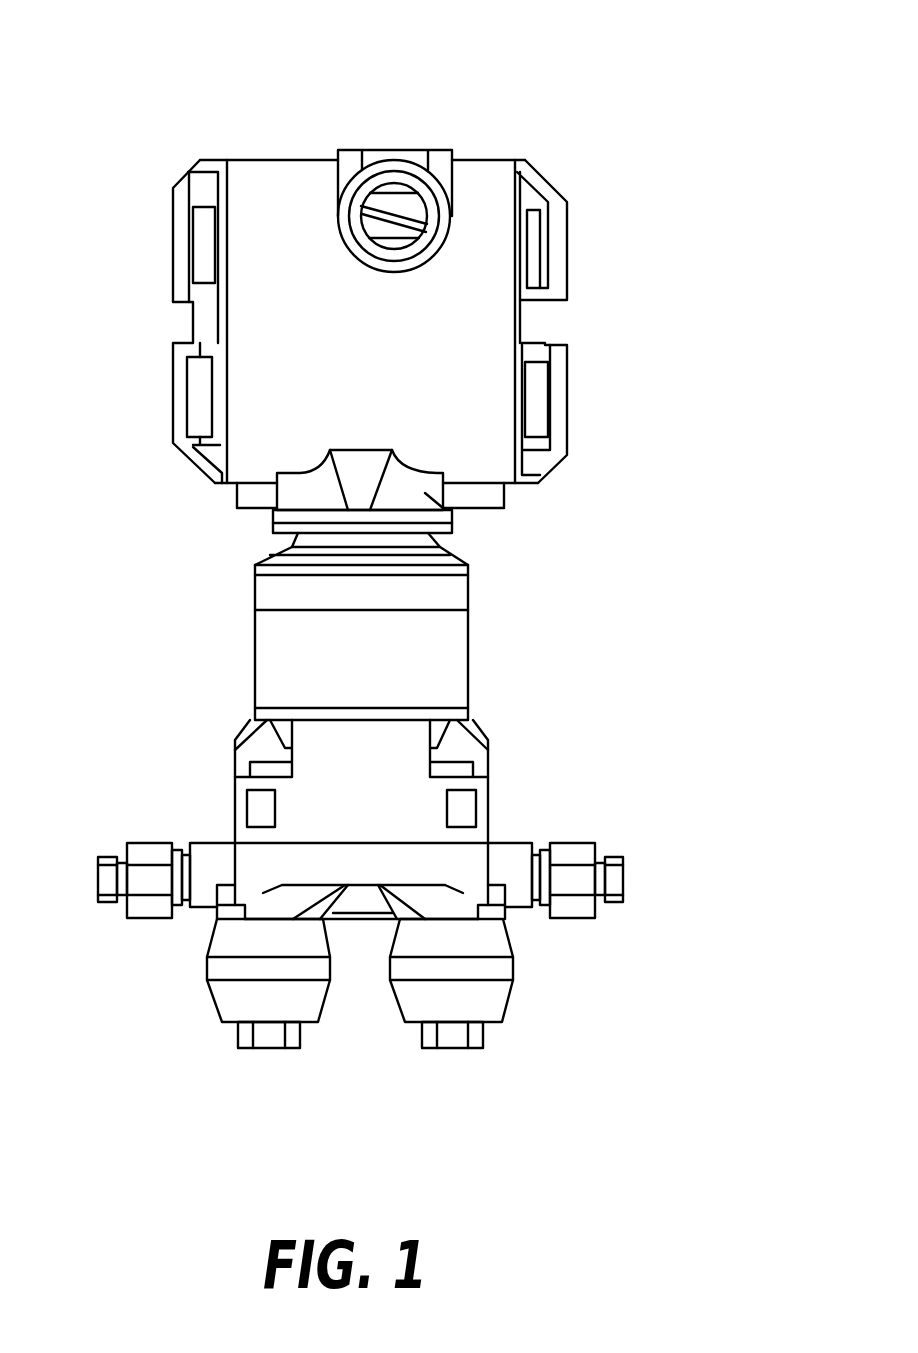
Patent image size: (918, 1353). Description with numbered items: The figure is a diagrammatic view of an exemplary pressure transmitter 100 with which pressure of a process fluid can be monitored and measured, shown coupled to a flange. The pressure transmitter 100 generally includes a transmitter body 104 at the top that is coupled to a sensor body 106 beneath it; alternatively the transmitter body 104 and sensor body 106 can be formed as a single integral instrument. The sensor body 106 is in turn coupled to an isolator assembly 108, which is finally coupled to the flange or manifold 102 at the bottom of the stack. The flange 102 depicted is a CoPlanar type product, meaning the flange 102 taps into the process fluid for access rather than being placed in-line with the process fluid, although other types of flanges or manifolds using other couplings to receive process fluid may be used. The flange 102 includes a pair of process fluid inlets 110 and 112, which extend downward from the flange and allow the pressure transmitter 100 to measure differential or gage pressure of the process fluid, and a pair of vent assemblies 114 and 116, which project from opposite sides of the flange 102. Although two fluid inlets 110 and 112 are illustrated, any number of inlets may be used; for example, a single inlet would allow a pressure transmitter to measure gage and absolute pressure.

The pressure transmitter 100 is at (530, 102).
The flange 102 is at (488, 843).
The transmitter body 104 is at (257, 160).
The sensor body 106 is at (468, 617).
The isolator assembly 108 is at (235, 762).
The process fluid inlet 110 is at (270, 1048).
The process fluid inlet 112 is at (462, 1040).
The vent assembly 114 is at (140, 912).
The vent assembly 116 is at (575, 908).